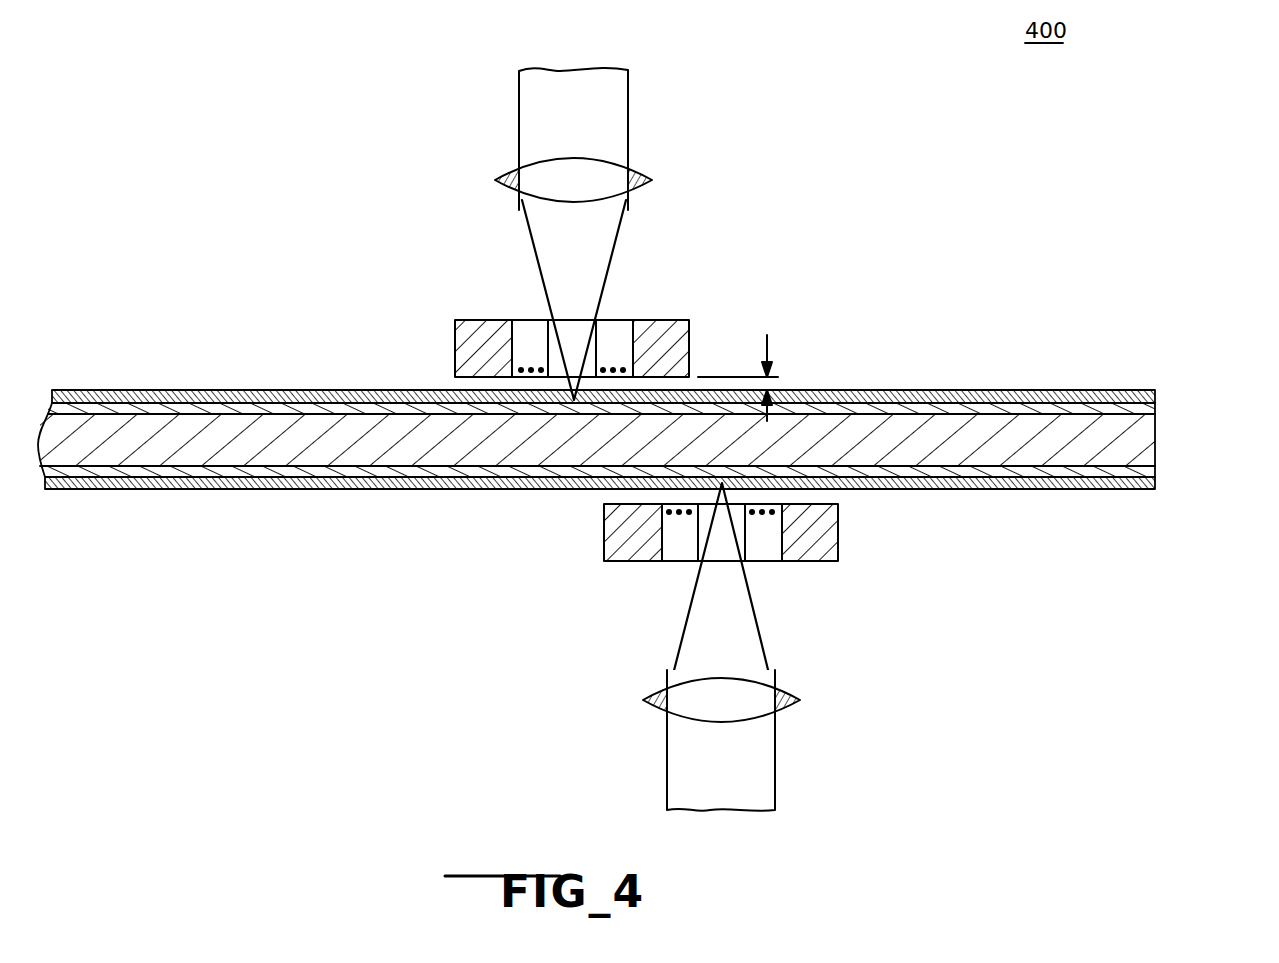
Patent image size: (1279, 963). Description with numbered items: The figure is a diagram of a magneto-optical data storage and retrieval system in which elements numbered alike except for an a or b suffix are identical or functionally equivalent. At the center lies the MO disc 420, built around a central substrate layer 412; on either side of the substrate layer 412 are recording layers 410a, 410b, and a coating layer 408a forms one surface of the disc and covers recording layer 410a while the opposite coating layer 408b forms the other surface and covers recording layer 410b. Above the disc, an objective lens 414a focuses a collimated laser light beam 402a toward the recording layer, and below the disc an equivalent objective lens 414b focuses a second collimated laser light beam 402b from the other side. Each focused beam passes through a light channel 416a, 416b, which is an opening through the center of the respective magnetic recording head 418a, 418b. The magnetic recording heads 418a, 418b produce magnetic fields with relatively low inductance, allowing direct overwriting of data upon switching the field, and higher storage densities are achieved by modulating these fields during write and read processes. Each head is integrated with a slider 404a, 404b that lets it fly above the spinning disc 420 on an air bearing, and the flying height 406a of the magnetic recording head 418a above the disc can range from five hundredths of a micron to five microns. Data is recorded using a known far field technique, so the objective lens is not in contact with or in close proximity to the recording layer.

The collimated laser light beam 402a is at (629, 118).
The collimated laser light beam 402b is at (775, 775).
The slider 404a is at (564, 317).
The slider 404b is at (709, 559).
The flying height 406a is at (770, 350).
The coating layer 408a is at (1155, 396).
The coating layer 408b is at (1155, 485).
The recording layer 410a is at (1155, 408).
The recording layer 410b is at (1155, 470).
The substrate layer 412 is at (1155, 440).
The objective lens 414a is at (505, 175).
The objective lens 414b is at (643, 698).
The light channel 416a is at (548, 330).
The light channel 416b is at (690, 540).
The magnetic recording head 418a is at (515, 366).
The magnetic recording head 418b is at (690, 518).
The MO disc 420 is at (653, 414).